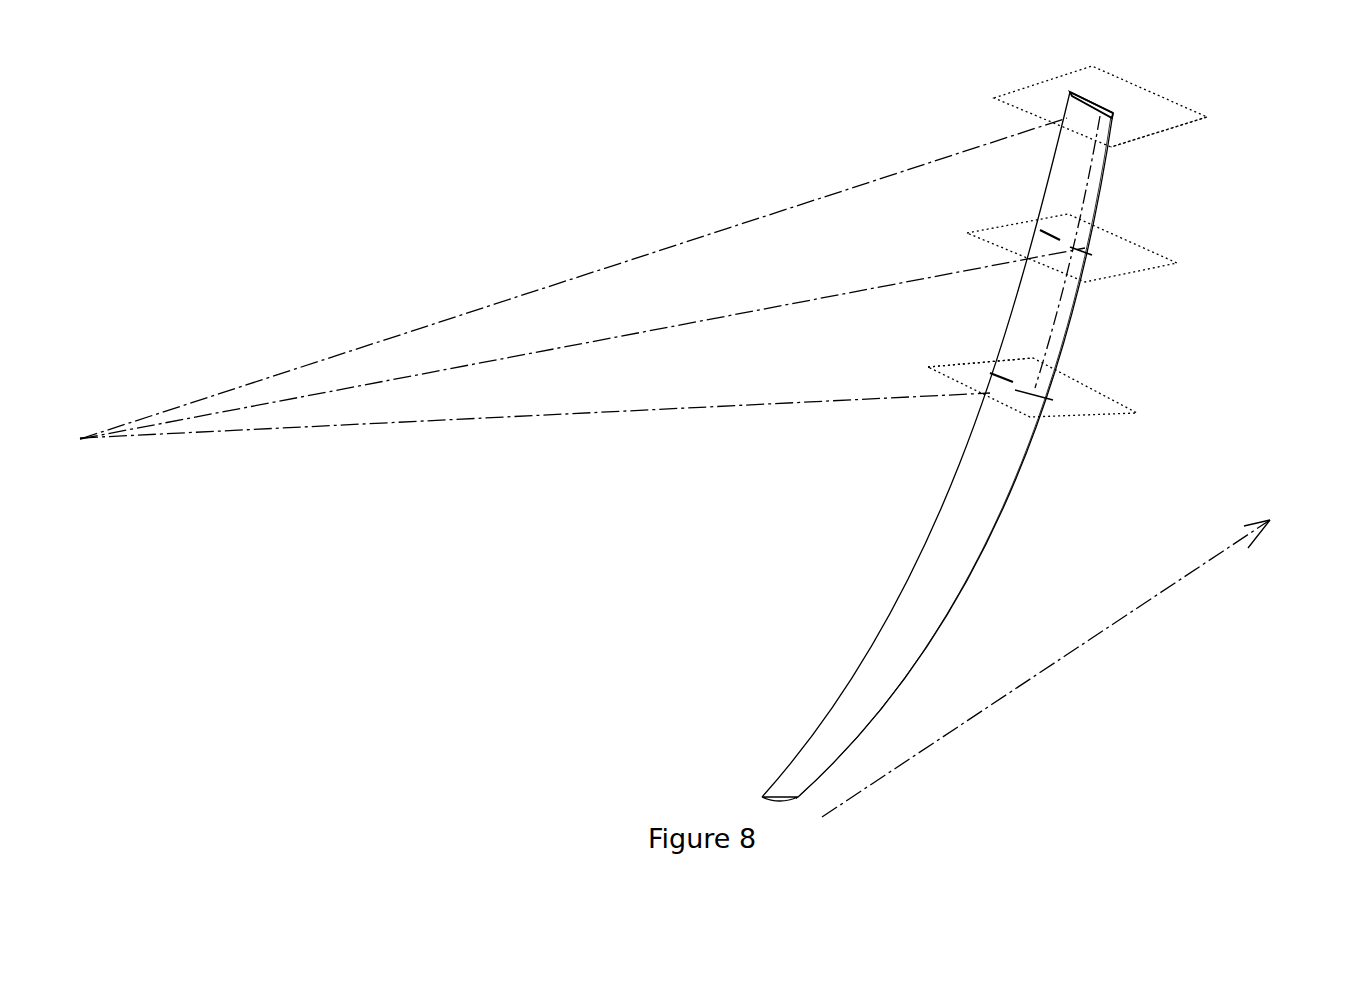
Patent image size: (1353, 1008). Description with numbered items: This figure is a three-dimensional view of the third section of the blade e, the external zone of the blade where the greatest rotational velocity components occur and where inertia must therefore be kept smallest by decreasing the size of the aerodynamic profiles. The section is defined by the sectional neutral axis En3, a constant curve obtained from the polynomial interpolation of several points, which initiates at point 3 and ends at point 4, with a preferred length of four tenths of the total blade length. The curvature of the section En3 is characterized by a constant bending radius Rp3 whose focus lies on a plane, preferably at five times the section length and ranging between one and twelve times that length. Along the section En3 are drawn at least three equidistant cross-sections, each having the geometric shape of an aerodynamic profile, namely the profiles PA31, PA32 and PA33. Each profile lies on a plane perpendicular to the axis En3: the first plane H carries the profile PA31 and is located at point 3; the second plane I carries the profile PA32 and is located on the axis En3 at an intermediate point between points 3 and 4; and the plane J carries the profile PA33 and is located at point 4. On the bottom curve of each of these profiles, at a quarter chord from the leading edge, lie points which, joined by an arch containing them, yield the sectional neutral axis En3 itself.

The point 3 is at (1030, 382).
The point 4 is at (1112, 113).
The aerodynamic profile PA33 is at (1100, 105).
The aerodynamic profile PA32 is at (1045, 237).
The aerodynamic profile PA31 is at (1030, 382).
The third division section / sectional neutral axis En3 is at (1065, 323).
The bending radius Rp3 is at (633, 332).
The second plane I is at (983, 227).
The plane J is at (1138, 139).
The first plane H is at (942, 372).
The blade e is at (882, 685).